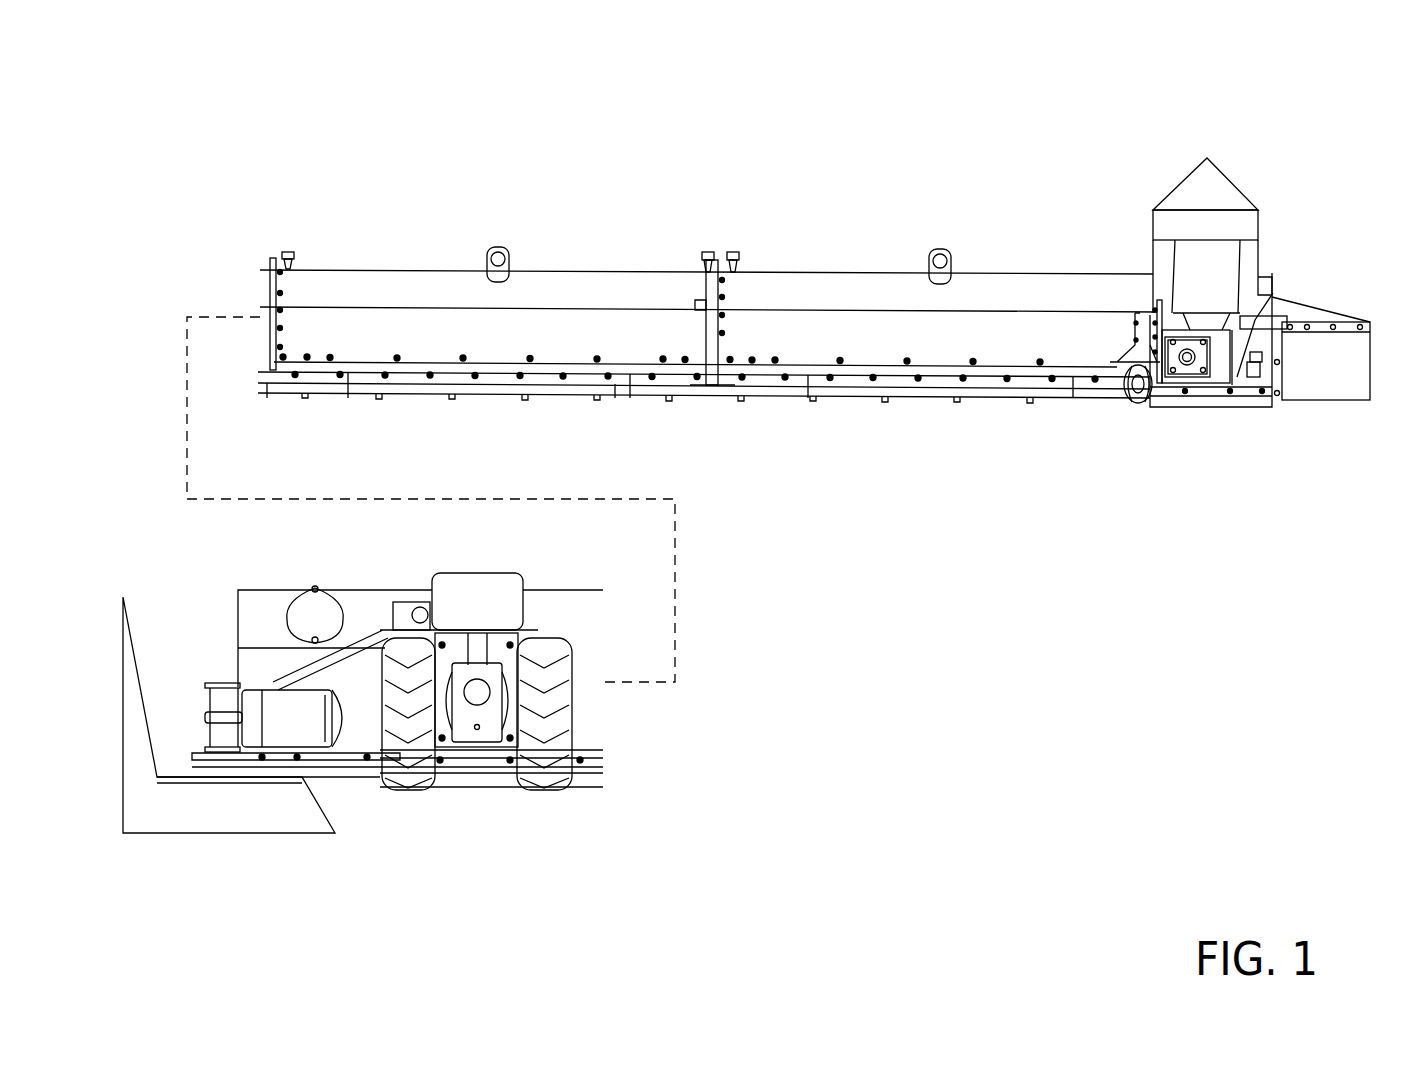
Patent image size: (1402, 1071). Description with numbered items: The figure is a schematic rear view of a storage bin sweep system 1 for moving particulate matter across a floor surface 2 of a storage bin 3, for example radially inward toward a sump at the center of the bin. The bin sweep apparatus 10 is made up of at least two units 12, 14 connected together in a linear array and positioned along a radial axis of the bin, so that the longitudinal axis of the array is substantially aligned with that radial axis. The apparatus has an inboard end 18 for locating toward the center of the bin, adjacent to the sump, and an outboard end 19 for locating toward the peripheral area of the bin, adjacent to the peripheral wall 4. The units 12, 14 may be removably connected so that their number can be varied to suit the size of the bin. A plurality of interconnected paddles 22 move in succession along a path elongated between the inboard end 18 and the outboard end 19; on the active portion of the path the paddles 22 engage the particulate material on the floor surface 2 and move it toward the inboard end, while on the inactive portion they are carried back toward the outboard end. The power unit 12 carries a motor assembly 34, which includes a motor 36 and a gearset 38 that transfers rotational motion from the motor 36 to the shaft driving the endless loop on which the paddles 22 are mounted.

The storage bin sweep system 1 is at (207, 164).
The bin sweep apparatus 10 is at (1254, 117).
The power unit 12 is at (1202, 434).
The unit 14 is at (245, 564).
The inboard end 18 is at (1361, 273).
The outboard end 19 is at (285, 572).
The floor surface 2 is at (247, 397).
The paddles 22 is at (812, 402).
The storage bin 3 is at (100, 546).
The motor assembly 34 is at (1282, 261).
The motor 36 is at (1197, 268).
The gearset 38 is at (1216, 398).
The peripheral wall 4 is at (125, 675).